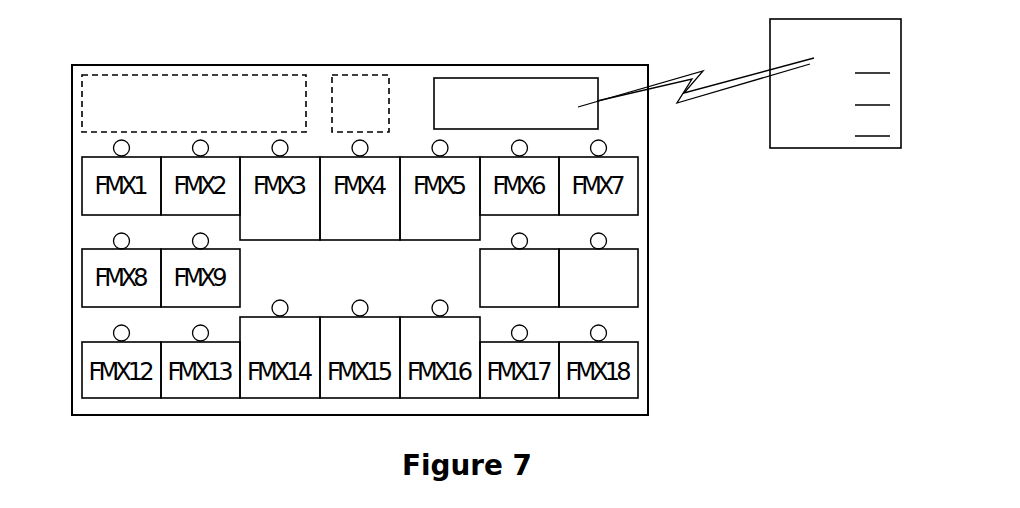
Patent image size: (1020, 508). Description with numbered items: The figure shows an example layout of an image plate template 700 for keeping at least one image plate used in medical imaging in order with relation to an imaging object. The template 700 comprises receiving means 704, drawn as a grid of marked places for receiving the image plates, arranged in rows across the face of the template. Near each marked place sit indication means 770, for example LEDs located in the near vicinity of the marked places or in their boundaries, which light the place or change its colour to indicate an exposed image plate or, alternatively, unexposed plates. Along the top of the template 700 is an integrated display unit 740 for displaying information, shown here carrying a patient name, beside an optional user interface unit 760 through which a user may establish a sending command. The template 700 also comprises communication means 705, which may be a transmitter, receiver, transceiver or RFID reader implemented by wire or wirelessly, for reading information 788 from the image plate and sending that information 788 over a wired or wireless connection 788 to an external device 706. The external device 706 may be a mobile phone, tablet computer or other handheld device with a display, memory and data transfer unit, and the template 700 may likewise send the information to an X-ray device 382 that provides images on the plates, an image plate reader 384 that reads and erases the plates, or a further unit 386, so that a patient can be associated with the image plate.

The image plate template 700 is at (72, 222).
The receiving means 704 is at (640, 272).
The communication means 705 is at (540, 78).
The external device 706 is at (835, 118).
The integrated display unit 740 is at (148, 75).
The user interface unit 760 is at (345, 75).
The indication means 770 is at (113, 329).
The information / wireless connection 788 is at (723, 80).
The X-ray device 382 is at (872, 62).
The image plate reader 384 is at (872, 94).
The data item 386 is at (872, 125).